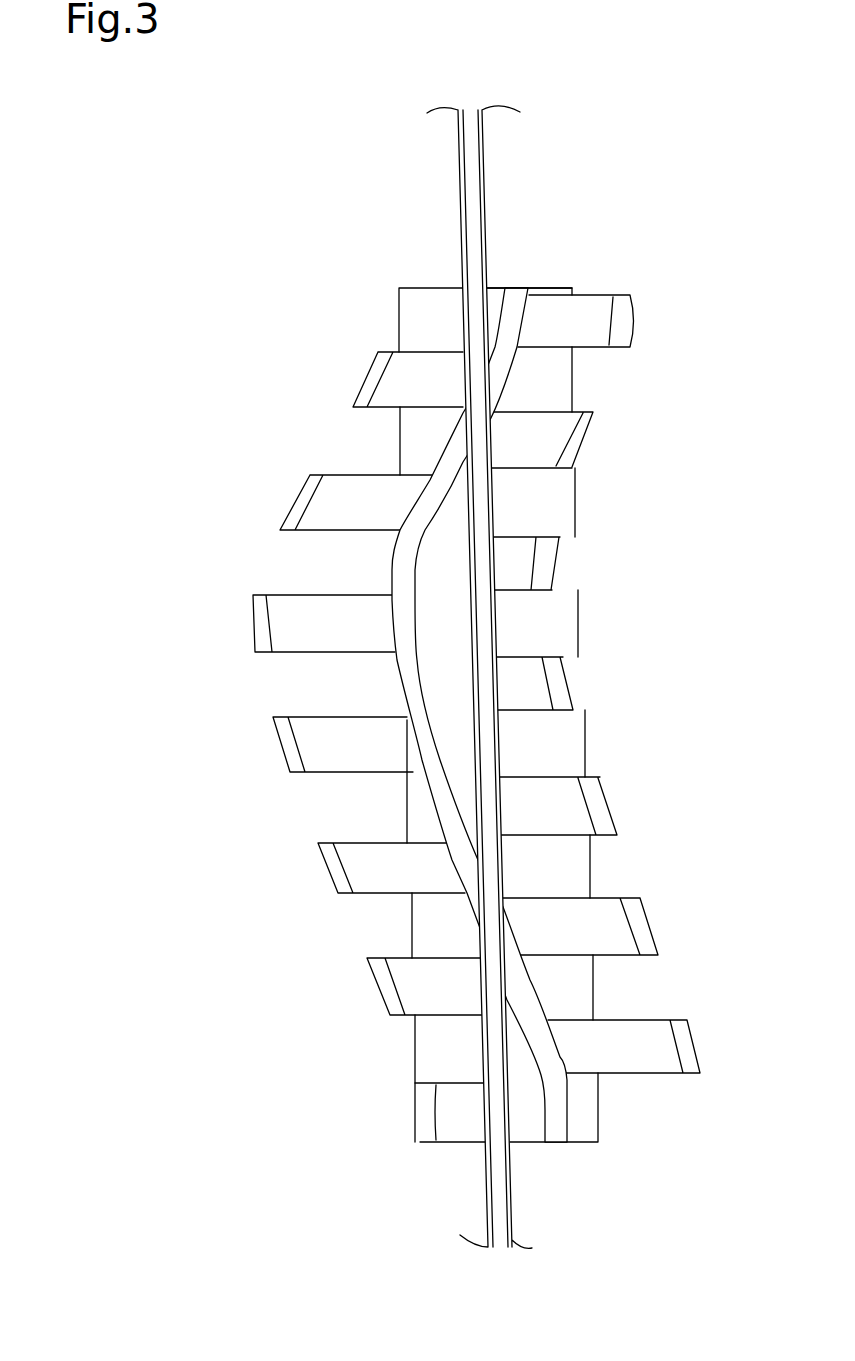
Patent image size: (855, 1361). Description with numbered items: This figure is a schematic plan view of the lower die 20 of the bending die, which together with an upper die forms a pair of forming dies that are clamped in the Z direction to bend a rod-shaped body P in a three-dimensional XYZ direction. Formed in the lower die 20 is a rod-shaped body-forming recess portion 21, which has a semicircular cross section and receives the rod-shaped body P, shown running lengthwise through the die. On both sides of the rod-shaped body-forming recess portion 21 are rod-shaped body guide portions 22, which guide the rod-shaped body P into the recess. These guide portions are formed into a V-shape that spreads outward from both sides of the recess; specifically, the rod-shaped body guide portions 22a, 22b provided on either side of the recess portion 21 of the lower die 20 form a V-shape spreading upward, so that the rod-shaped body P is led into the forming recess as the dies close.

The lower die 20 is at (578, 578).
The rod-shaped body-forming recess portion 21 is at (412, 697).
The rod-shaped body guide portion 22 is at (477, 717).
The rod-shaped body guide portion 22a is at (413, 378).
The rod-shaped body guide portion 22b is at (604, 917).
The rod-shaped body P is at (492, 1056).